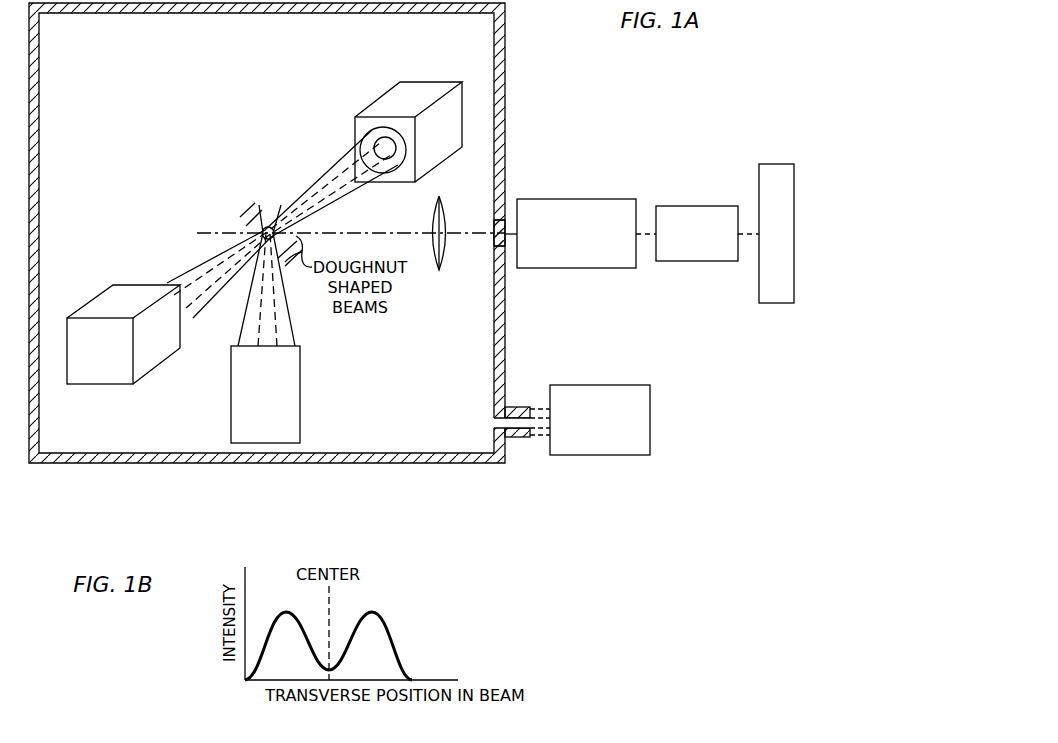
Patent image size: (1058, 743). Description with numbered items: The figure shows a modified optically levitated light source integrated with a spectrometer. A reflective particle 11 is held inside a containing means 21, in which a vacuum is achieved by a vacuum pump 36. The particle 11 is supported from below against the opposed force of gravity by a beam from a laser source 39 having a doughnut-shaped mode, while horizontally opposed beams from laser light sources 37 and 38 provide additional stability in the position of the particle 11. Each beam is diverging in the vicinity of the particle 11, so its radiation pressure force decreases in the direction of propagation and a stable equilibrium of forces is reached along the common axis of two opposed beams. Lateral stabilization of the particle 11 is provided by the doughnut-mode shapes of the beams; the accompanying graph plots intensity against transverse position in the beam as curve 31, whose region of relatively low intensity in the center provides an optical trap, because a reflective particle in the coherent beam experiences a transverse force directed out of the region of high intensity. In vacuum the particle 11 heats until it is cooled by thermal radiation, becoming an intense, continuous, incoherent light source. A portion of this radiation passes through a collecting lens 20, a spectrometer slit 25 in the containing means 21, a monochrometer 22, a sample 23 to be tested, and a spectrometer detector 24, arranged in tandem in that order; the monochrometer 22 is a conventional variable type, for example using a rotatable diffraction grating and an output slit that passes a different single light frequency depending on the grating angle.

In FIG. 1A, the particle 11 is at (268, 226).
In FIG. 1A, the collecting lens 20 is at (444, 262).
In FIG. 1A, the containing means 21 is at (505, 130).
In FIG. 1A, the monochrometer 22 is at (567, 198).
In FIG. 1A, the sample 23 is at (688, 205).
In FIG. 1A, the spectrometer detector 24 is at (777, 163).
In FIG. 1A, the spectrometer slit 25 is at (509, 248).
In FIG. 1B, the curve 31 is at (352, 622).
In FIG. 1A, the vacuum pump 36 is at (602, 385).
In FIG. 1A, the laser light source 37 is at (113, 302).
In FIG. 1A, the laser light source 38 is at (398, 102).
In FIG. 1A, the laser source 39 is at (300, 388).